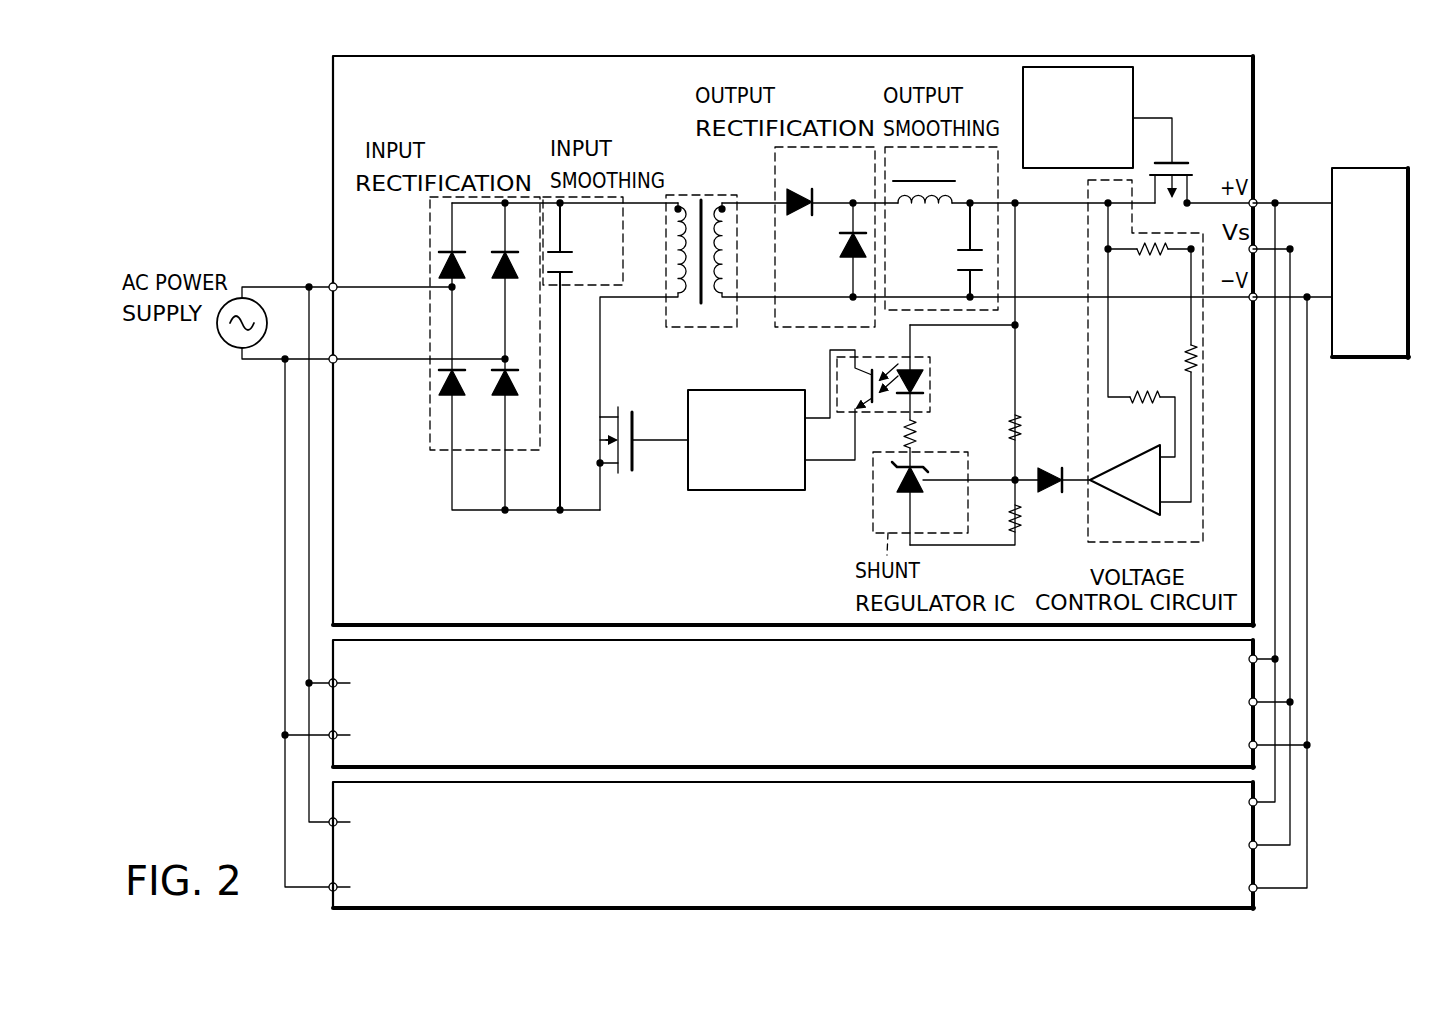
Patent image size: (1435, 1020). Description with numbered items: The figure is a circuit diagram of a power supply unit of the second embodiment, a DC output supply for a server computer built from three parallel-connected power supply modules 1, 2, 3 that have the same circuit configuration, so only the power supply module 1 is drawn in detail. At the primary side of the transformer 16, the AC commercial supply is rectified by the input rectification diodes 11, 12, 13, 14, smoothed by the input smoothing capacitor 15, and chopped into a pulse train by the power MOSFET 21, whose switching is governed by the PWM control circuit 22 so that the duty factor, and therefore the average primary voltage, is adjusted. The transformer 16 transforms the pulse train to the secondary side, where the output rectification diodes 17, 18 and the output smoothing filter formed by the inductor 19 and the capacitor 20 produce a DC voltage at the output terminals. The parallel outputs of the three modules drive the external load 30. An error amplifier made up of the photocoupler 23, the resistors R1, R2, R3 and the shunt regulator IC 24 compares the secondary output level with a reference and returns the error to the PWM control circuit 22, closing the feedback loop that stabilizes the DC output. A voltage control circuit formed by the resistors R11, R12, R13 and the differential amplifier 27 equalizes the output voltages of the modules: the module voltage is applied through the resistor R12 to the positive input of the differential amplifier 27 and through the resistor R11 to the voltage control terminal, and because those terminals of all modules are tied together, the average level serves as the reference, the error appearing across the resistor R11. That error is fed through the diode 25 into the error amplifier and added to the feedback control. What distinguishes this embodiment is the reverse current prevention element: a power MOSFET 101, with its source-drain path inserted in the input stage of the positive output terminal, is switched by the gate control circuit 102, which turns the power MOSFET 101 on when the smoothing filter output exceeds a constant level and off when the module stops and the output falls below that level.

The power supply module 1 is at (331, 162).
The power supply module 2 is at (333, 655).
The power supply module 3 is at (331, 905).
The diode 11 is at (456, 290).
The diode 12 is at (509, 290).
The diode 13 is at (456, 408).
The diode 14 is at (509, 408).
The capacitor 15 is at (572, 262).
The transformer 16 is at (693, 185).
The diode 17 is at (806, 190).
The diode 18 is at (836, 244).
The inductor 19 is at (941, 173).
The capacitor 20 is at (952, 258).
The power MOSFET 21 is at (638, 405).
The PWM control circuit 22 is at (776, 390).
The photocoupler 23 is at (880, 412).
The shunt regulator IC 24 is at (918, 498).
The diode 25 is at (1053, 455).
The differential amplifier 27 is at (1122, 454).
The external load 30 is at (1370, 358).
The power MOSFET 101 is at (1192, 162).
The gate control circuit 102 is at (1133, 88).
The resistor R1 is at (925, 434).
The resistor R2 is at (1032, 428).
The resistor R3 is at (1032, 518).
The resistor R11 is at (1149, 264).
The resistor R12 is at (1150, 411).
The resistor R13 is at (1200, 375).